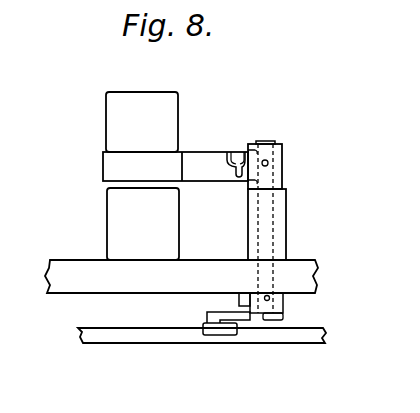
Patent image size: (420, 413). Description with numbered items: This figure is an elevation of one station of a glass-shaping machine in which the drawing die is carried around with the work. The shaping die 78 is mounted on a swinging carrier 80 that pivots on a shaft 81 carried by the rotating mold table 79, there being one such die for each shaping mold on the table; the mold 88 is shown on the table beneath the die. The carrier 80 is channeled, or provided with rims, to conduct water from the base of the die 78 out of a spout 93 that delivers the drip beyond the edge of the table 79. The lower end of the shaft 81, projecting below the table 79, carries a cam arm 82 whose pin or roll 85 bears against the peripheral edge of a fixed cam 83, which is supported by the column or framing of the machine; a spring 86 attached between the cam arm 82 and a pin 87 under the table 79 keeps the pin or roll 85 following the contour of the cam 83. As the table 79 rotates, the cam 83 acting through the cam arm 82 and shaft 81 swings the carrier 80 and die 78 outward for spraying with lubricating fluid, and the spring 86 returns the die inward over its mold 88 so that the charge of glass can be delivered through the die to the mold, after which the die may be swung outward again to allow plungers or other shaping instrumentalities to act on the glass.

The shaping die 78 is at (106, 117).
The rotating mold table 79 is at (61, 260).
The swinging carrier 80 is at (198, 154).
The shaft 81 is at (272, 142).
The cam arm 82 is at (250, 321).
The fixed cam 83 is at (122, 343).
The pin or roll 85 is at (213, 337).
The spring 86 is at (239, 300).
The pin 87 is at (284, 295).
The mold 88 is at (168, 222).
The spout 93 is at (239, 180).